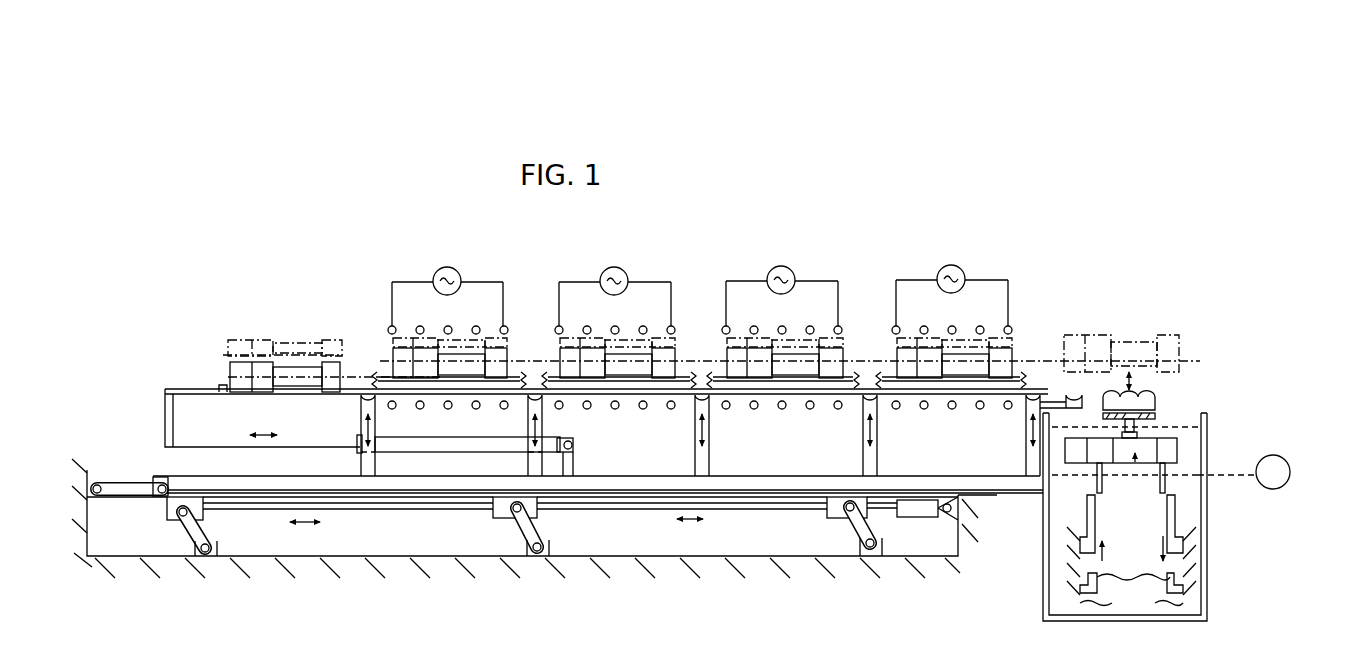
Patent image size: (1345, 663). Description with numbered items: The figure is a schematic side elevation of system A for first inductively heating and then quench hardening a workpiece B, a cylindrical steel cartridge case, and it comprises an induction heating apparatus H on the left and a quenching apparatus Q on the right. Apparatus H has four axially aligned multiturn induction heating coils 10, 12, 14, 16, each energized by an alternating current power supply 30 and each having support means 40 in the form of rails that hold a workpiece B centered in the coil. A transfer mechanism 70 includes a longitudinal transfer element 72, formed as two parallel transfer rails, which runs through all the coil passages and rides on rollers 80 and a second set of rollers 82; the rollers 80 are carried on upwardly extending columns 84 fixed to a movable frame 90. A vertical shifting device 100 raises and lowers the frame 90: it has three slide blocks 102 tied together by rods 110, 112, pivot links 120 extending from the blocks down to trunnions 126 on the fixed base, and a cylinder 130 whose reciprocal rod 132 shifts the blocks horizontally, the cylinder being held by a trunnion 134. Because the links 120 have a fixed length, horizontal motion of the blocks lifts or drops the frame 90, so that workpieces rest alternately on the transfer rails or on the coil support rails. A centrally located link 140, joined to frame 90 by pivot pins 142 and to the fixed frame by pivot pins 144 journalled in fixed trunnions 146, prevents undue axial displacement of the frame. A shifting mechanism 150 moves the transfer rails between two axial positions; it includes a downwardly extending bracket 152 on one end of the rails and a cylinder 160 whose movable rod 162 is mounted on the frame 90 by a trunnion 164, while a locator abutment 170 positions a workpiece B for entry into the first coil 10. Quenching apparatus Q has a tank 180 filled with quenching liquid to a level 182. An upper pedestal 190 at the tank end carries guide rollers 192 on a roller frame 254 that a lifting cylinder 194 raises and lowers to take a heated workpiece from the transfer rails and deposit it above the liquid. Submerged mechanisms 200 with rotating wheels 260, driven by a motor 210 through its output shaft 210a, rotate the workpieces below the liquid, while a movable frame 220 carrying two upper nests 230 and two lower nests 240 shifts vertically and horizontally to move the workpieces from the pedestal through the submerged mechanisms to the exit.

The system A is at (830, 212).
The induction heating apparatus H is at (522, 268).
The workpiece B is at (298, 365).
The quenching apparatus Q is at (1212, 533).
The induction heating coil 10 is at (446, 323).
The induction heating coil 12 is at (613, 322).
The induction heating coil 14 is at (781, 320).
The induction heating coil 16 is at (948, 318).
The alternating current power supply 30 is at (469, 255).
The support means 40 is at (468, 383).
The transfer mechanism 70 is at (149, 452).
The transfer element 72 is at (743, 400).
The rollers 80 is at (367, 391).
The second set of rollers 82 is at (1072, 391).
The columns 84 is at (361, 413).
The movable frame 90 is at (615, 475).
The vertical shifting device 100 is at (838, 545).
The slide blocks 102 is at (196, 501).
The rod 110 is at (395, 510).
The rod 112 is at (750, 510).
The links 120 is at (212, 529).
The trunnion 126 is at (219, 554).
The cylinder 130 is at (923, 500).
The reciprocal rod 132 is at (886, 502).
The trunnion 134 is at (955, 509).
The link 140 is at (131, 490).
The pivot pins 142 is at (158, 482).
The pivot pins 144 is at (98, 484).
The fixed trunnions 146 is at (93, 482).
The shifting mechanism 150 is at (452, 452).
The bracket 152 is at (170, 403).
The cylinder 160 is at (447, 439).
The movable rod 162 is at (298, 447).
The trunnion 164 is at (582, 447).
The locator abutment 170 is at (222, 387).
The tank 180 is at (1228, 590).
The liquid level 182 is at (1198, 419).
The upper pedestal 190 is at (1153, 402).
The guide rollers 192 is at (1147, 391).
The lifting cylinder 194 is at (1140, 422).
The submerged mechanisms 200 is at (1158, 480).
The motor 210 is at (1285, 461).
The output shaft 210a is at (1242, 477).
The movable frame 220 is at (1131, 606).
The upper nests 230 is at (1168, 508).
The lower nests 240 is at (1131, 561).
The roller frame 254 is at (1102, 415).
The rotating wheels 260 is at (1168, 465).